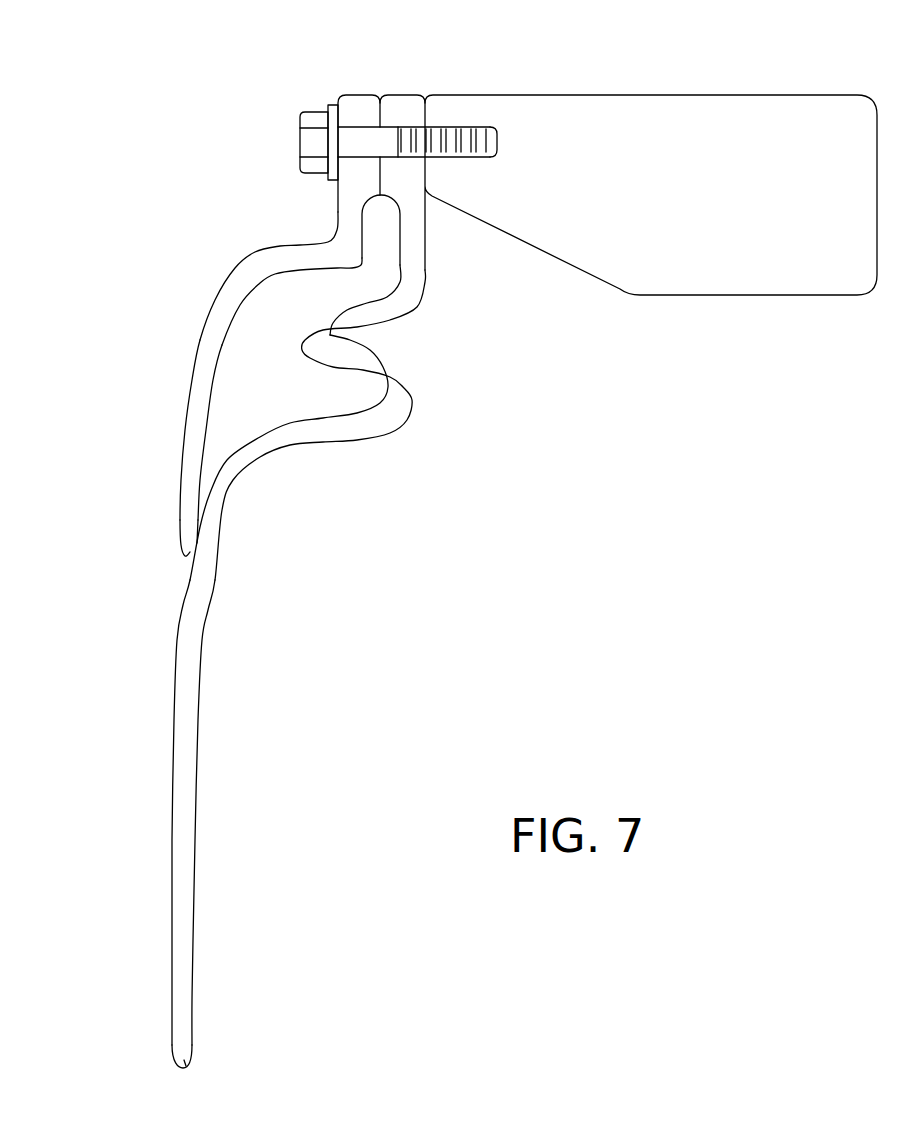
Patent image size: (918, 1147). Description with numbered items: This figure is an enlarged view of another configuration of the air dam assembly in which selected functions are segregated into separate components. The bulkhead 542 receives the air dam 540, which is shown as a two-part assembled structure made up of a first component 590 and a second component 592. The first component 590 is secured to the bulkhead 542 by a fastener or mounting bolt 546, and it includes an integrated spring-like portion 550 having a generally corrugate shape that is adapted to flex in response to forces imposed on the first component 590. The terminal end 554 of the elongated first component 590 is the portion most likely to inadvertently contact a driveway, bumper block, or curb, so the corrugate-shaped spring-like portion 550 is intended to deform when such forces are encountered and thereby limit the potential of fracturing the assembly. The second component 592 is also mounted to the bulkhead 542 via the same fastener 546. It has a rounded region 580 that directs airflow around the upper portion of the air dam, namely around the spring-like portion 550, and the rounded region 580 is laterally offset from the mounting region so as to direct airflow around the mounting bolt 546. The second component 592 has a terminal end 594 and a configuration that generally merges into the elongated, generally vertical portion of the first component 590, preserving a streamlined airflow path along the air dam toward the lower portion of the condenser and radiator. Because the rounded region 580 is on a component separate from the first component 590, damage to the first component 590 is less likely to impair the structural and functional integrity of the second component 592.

The air dam 540 is at (274, 649).
The bulkhead 542 is at (568, 105).
The mounting bolt 546 is at (355, 105).
The spring-like portion 550 is at (396, 445).
The terminal end 554 is at (188, 1064).
The rounded region 580 is at (242, 364).
The first component 590 is at (186, 808).
The second component 592 is at (231, 252).
The terminal end 594 is at (186, 554).